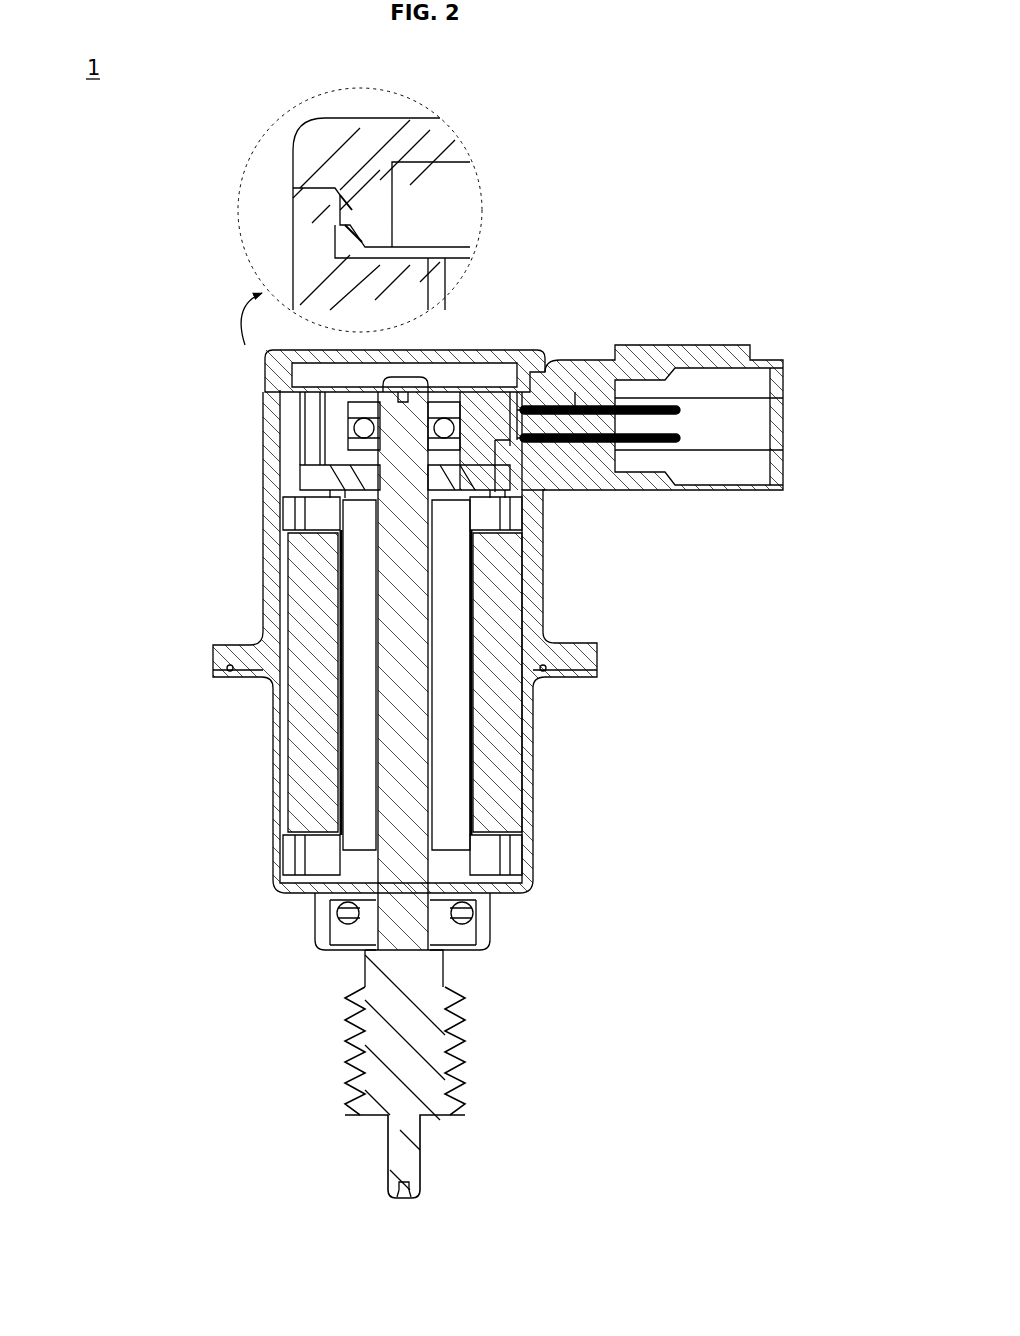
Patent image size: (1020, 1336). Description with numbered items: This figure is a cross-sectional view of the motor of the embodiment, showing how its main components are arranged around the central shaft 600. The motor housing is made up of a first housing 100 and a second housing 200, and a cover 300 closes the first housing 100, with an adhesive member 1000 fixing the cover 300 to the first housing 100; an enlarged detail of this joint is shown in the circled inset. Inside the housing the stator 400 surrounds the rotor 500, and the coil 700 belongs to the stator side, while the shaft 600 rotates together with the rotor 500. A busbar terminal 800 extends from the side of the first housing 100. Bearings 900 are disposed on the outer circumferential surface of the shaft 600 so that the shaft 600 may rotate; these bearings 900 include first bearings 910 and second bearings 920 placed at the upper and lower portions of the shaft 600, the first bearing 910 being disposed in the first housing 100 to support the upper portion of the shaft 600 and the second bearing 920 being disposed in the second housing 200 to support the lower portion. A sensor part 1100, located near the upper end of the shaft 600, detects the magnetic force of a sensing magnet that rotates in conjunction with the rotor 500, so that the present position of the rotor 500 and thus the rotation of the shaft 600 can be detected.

The first housing 100 is at (318, 265).
The second housing 200 is at (528, 830).
The cover 300 is at (300, 160).
The stator 400 is at (497, 577).
The rotor 500 is at (455, 750).
The shaft 600 is at (385, 1050).
The coil 700 is at (300, 510).
The busbar terminal 800 is at (580, 420).
The bearings 900 is at (215, 1189).
The first bearing 910 is at (437, 400).
The second bearing 920 is at (322, 912).
The adhesive member 1000 is at (320, 230).
The sensor part 1100 is at (310, 468).